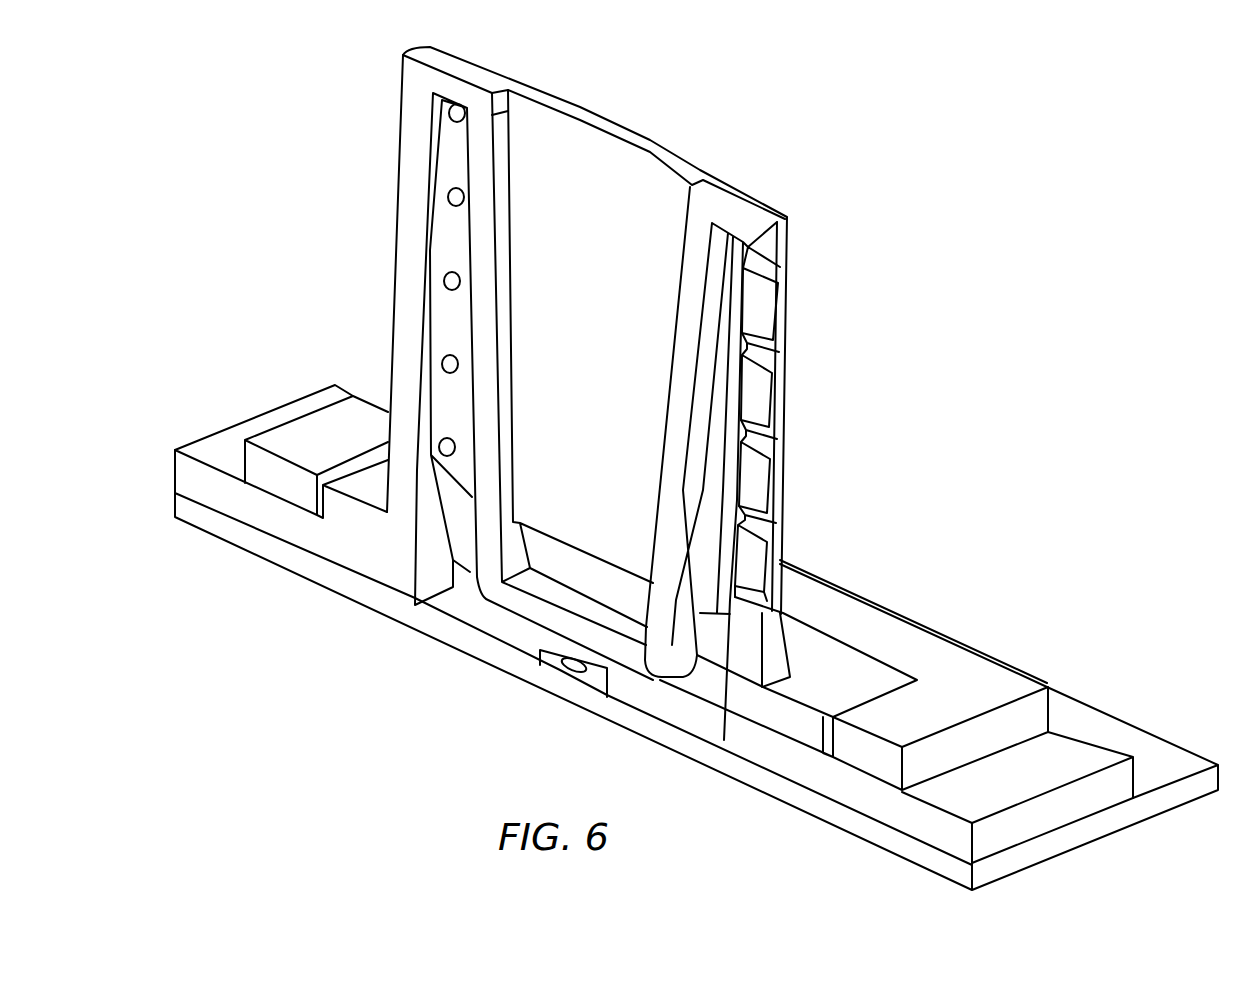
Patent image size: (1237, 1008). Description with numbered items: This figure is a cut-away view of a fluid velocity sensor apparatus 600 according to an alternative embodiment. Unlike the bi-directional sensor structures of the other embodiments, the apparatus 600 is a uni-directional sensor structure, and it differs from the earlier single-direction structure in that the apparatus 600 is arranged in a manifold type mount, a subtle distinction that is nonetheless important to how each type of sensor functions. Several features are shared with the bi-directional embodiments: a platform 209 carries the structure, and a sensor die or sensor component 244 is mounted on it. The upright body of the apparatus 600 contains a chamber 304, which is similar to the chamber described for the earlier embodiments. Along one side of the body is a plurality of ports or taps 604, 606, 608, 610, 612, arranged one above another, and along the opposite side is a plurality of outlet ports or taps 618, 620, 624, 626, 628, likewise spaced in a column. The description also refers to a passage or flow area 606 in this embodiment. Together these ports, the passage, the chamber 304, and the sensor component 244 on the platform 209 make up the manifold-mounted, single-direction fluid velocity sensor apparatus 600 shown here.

The fluid velocity sensor apparatus 600 is at (812, 124).
The platform 209 is at (964, 625).
The sensor die or sensor component 244 is at (571, 668).
The chamber 304 is at (614, 166).
The port or tap 604 is at (775, 273).
The port or tap 606 is at (775, 358).
The port or tap 608 is at (773, 443).
The port or tap 610 is at (771, 527).
The port or tap 612 is at (768, 608).
The outlet port or tap 618 is at (449, 113).
The outlet port or tap 620 is at (448, 197).
The outlet port or tap 624 is at (444, 281).
The outlet port or tap 626 is at (442, 364).
The outlet port or tap 628 is at (439, 447).